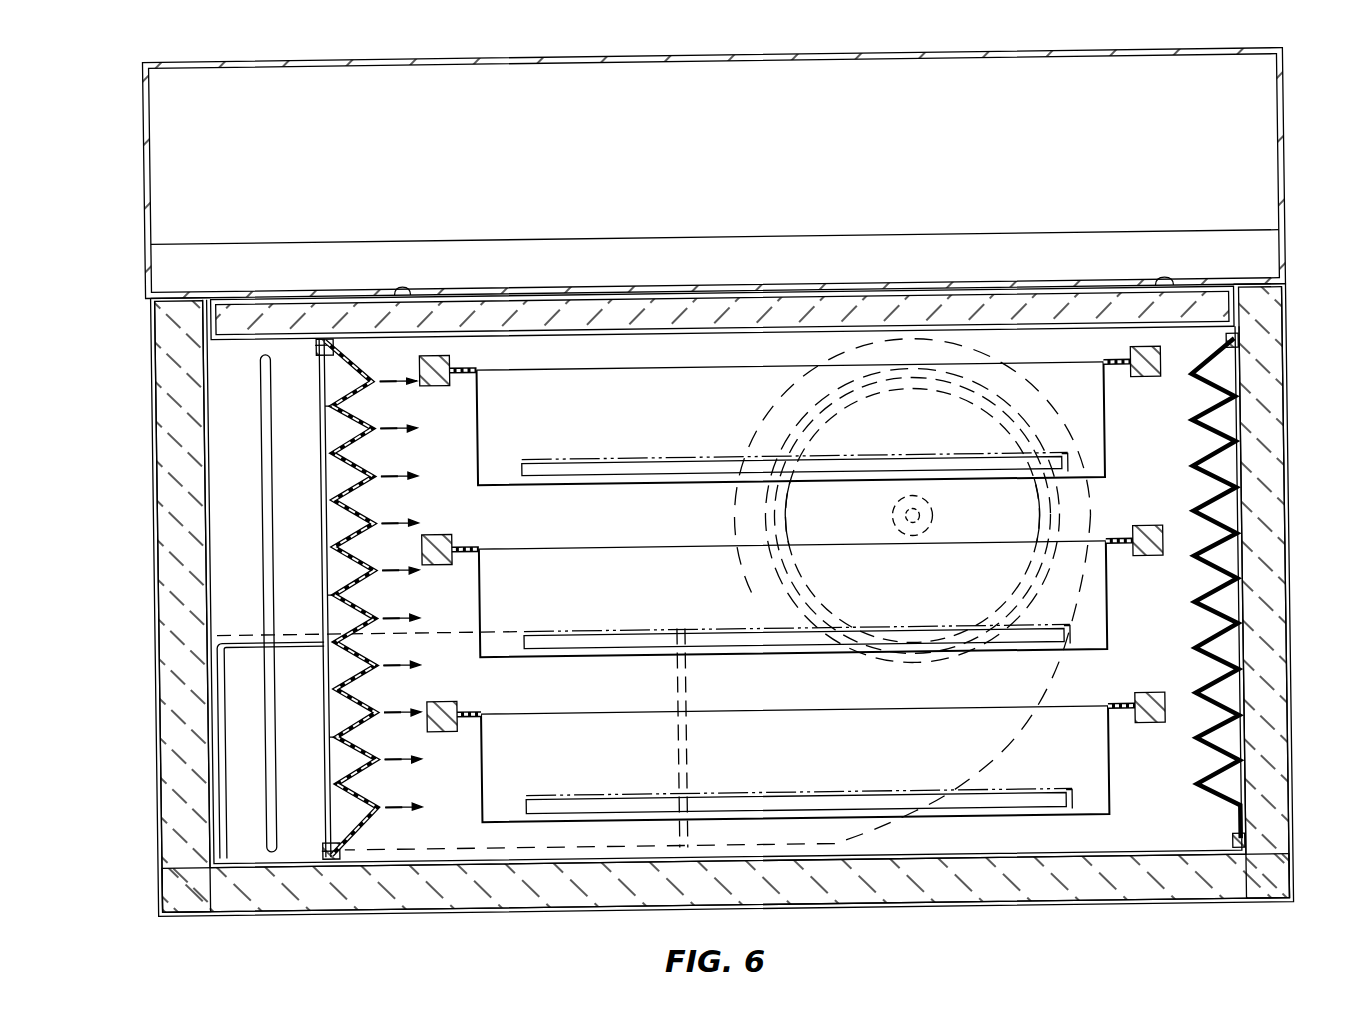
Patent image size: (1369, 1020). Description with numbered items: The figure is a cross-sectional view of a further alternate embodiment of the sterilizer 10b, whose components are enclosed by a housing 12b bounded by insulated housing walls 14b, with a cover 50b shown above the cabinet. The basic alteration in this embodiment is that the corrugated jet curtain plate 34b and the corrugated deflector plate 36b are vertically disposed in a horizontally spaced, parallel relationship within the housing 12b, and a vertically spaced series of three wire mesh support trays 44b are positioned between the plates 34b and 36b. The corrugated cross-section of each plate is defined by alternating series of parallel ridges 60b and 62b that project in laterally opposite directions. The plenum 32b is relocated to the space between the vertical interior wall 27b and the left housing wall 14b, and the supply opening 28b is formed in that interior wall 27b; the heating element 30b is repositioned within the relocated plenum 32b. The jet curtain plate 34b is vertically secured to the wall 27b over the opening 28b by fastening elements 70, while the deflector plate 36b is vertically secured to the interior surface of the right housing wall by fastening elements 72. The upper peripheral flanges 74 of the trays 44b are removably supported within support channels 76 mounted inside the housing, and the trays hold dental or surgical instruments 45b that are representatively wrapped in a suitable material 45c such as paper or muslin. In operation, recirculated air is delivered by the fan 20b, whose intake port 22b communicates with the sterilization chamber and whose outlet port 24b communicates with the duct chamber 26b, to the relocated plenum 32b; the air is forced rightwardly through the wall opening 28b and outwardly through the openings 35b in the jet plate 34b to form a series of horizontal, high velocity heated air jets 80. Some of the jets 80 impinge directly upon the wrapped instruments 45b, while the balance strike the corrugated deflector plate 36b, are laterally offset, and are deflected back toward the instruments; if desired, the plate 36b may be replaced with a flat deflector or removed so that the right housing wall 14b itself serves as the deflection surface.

The sterilizer 10b is at (1305, 166).
The housing 12b is at (150, 480).
The housing wall 14b is at (603, 288).
The fan 20b is at (1029, 379).
The intake port 22b is at (1004, 522).
The outlet port 24b is at (672, 694).
The duct chamber 26b is at (314, 767).
The vertical interior wall 27b is at (320, 346).
The supply opening 28b is at (321, 389).
The heating element 30b is at (265, 450).
The plenum 32b is at (257, 519).
The jet curtain plate 34b is at (365, 787).
The openings 35b is at (370, 370).
The deflector plate 36b is at (1224, 379).
The wire mesh support tray 44b is at (1106, 484).
The instruments 45b is at (612, 458).
The wrapping material 45c is at (735, 456).
The lid 50b is at (753, 153).
The ridges 60b is at (362, 375).
The ridges 62b is at (331, 424).
The fastening elements 70 is at (332, 335).
The fastening elements 72 is at (1227, 352).
The upper peripheral flanges 74 is at (457, 366).
The support channels 76 is at (441, 382).
The heated air jets 80 is at (401, 418).